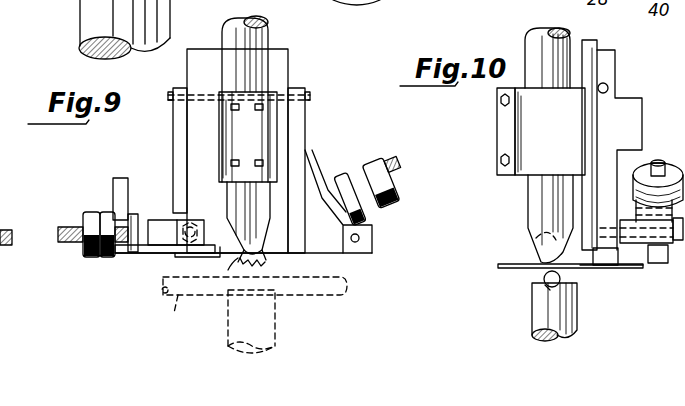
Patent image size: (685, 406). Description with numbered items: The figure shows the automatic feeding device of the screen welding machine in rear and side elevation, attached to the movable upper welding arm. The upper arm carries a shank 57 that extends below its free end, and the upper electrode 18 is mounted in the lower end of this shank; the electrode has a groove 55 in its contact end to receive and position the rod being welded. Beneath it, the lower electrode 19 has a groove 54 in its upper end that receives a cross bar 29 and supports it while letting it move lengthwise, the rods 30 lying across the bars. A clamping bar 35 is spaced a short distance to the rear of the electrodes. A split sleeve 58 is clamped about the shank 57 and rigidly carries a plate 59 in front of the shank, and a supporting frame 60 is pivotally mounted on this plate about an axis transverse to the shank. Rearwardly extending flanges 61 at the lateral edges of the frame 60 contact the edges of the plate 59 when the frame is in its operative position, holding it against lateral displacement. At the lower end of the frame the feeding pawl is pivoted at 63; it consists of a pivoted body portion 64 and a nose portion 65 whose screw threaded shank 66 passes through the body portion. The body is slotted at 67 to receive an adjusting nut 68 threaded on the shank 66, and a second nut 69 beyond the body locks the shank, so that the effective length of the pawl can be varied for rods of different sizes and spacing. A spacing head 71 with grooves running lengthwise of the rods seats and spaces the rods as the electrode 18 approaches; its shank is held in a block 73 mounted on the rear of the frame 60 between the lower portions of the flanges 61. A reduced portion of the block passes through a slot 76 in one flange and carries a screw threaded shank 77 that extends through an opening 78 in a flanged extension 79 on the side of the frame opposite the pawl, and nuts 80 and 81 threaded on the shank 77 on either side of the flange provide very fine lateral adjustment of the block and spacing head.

In FIG. 9, the upper electrode 18 is at (232, 230).
In FIG. 10, the upper electrode 18 is at (538, 217).
In FIG. 9, the lower electrode 19 is at (265, 325).
In FIG. 10, the lower electrode 19 is at (577, 312).
In FIG. 9, the cross bar 29 is at (253, 312).
In FIG. 10, the cross bar 29 is at (546, 285).
In FIG. 10, the rods 30 is at (507, 267).
In FIG. 10, the clamping bar 35 is at (543, 258).
In FIG. 10, the groove 54 is at (546, 286).
In FIG. 9, the groove 55 is at (238, 260).
In FIG. 9, the shank 57 is at (267, 32).
In FIG. 10, the shank 57 is at (537, 62).
In FIG. 10, the split sleeve 58 is at (502, 102).
In FIG. 9, the plate 59 is at (280, 72).
In FIG. 10, the plate 59 is at (598, 67).
In FIG. 10, the supporting frame 60 is at (610, 113).
In FIG. 9, the flanges 61 is at (180, 127).
In FIG. 10, the flanges 61 is at (598, 165).
In FIG. 10, the pawl pivot 63 is at (678, 245).
In FIG. 10, the body portion 64 is at (650, 232).
In FIG. 10, the nose portion 65 is at (658, 263).
In FIG. 9, the screw threaded shank 66 is at (399, 183).
In FIG. 10, the screw threaded shank 66 is at (657, 167).
In FIG. 9, the slot 67 is at (373, 218).
In FIG. 9, the adjusting nut 68 is at (337, 182).
In FIG. 10, the adjusting nut 68 is at (643, 203).
In FIG. 9, the lock nut 69 is at (397, 208).
In FIG. 10, the lock nut 69 is at (663, 165).
In FIG. 9, the spacing head 71 is at (264, 264).
In FIG. 10, the spacing head 71 is at (610, 262).
In FIG. 9, the block 73 is at (222, 243).
In FIG. 9, the slot 76 is at (180, 220).
In FIG. 9, the screw threaded shank 77 is at (65, 242).
In FIG. 9, the opening 78 is at (120, 247).
In FIG. 9, the flanged extension 79 is at (118, 182).
In FIG. 9, the nut 80 is at (132, 214).
In FIG. 9, the nut 81 is at (103, 213).